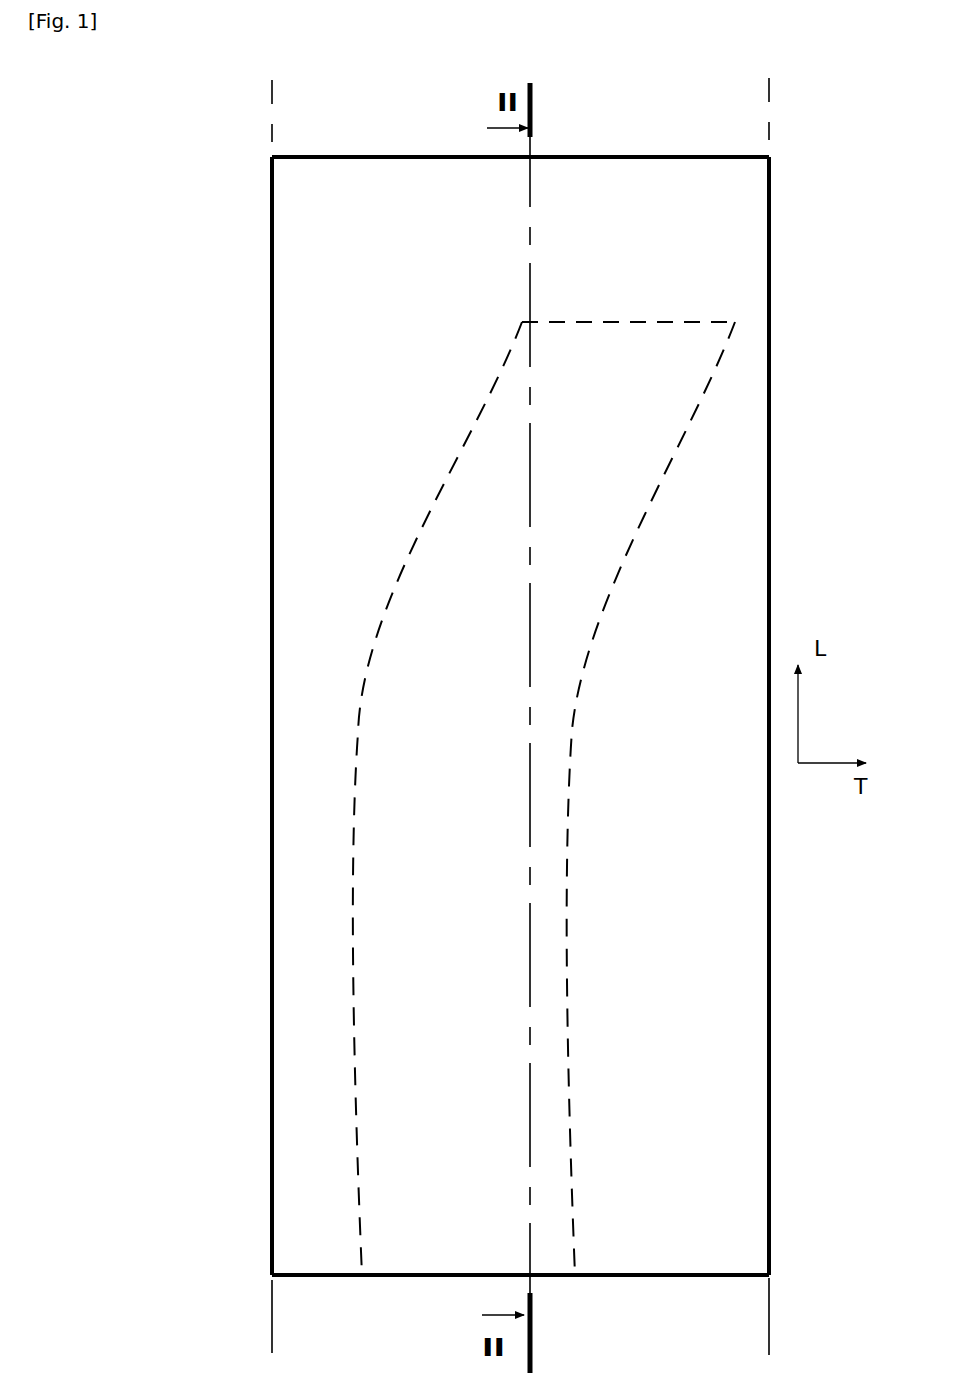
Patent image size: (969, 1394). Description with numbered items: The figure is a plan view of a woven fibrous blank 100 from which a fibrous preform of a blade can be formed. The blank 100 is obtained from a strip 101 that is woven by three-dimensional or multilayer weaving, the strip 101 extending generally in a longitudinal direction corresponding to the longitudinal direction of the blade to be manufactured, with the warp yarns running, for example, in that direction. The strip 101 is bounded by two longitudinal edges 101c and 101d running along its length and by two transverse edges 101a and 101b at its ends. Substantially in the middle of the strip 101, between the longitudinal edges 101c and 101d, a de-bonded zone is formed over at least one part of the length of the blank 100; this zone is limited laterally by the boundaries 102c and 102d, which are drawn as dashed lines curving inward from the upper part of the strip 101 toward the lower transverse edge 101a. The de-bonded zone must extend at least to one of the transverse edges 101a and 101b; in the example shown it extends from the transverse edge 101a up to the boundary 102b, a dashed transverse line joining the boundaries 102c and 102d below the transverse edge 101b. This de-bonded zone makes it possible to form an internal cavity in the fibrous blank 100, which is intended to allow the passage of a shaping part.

The fibrous blank 100 is at (247, 922).
The strip 101 is at (272, 120).
The transverse edge 101a is at (362, 1277).
The transverse edge 101b is at (462, 157).
The longitudinal edge 101c is at (270, 522).
The longitudinal edge 101d is at (770, 537).
The boundary 102b is at (600, 322).
The boundary 102c is at (365, 694).
The boundary 102d is at (563, 913).